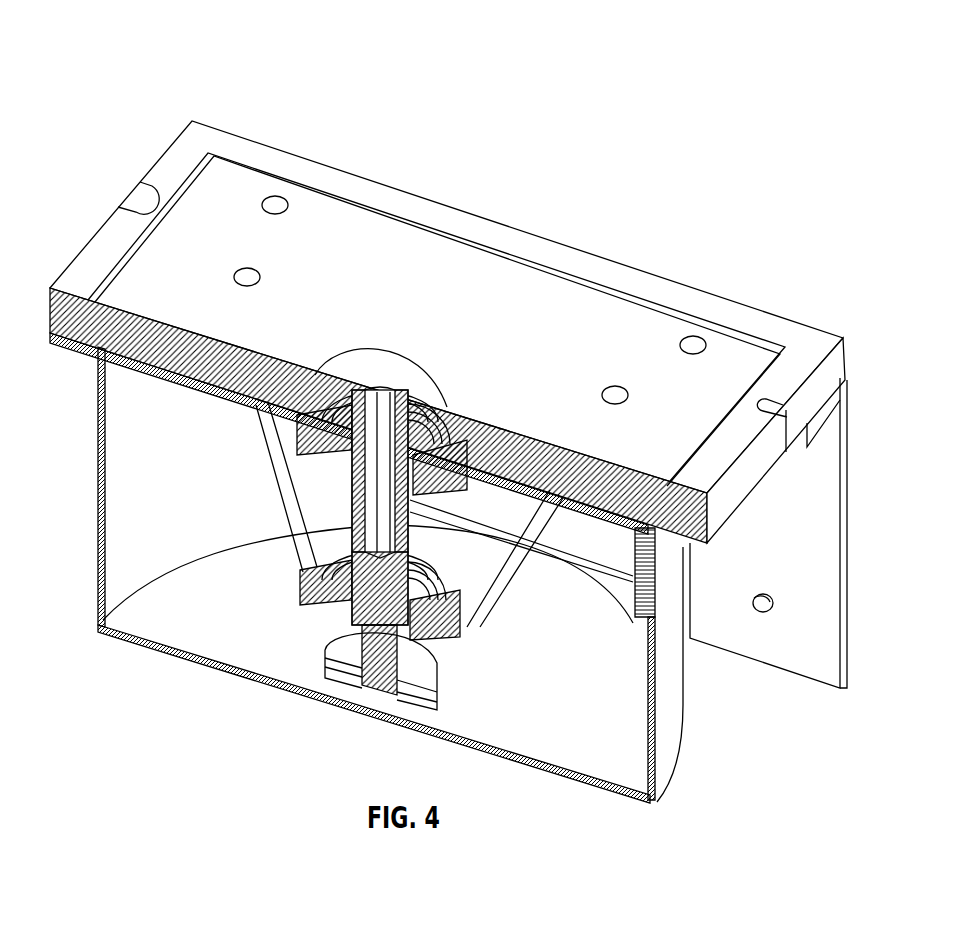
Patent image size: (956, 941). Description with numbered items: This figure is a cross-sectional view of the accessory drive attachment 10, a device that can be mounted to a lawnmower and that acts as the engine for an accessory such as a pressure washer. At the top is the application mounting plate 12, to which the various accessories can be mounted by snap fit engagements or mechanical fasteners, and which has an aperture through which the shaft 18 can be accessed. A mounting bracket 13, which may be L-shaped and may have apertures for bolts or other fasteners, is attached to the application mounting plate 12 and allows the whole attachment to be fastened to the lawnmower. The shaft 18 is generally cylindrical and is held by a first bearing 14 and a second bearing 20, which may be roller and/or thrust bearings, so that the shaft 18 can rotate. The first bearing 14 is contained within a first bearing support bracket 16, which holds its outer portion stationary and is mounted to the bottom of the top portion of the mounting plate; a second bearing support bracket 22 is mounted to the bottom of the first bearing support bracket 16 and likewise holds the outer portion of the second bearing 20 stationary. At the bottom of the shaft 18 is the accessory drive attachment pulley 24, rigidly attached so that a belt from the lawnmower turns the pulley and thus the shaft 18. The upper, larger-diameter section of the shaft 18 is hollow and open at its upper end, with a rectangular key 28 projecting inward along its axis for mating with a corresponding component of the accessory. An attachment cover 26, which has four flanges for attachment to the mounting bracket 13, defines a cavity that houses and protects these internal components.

The accessory drive attachment 10 is at (387, 99).
The application mounting plate 12 is at (463, 262).
The mounting bracket 13 is at (788, 533).
The first bearing 14 is at (430, 413).
The first bearing support bracket 16 is at (460, 485).
The shaft 18 is at (388, 596).
The second bearing 20 is at (433, 565).
The second bearing support bracket 22 is at (462, 635).
The accessory drive attachment pulley 24 is at (430, 667).
The attachment cover 26 is at (598, 763).
The key 28 is at (385, 403).